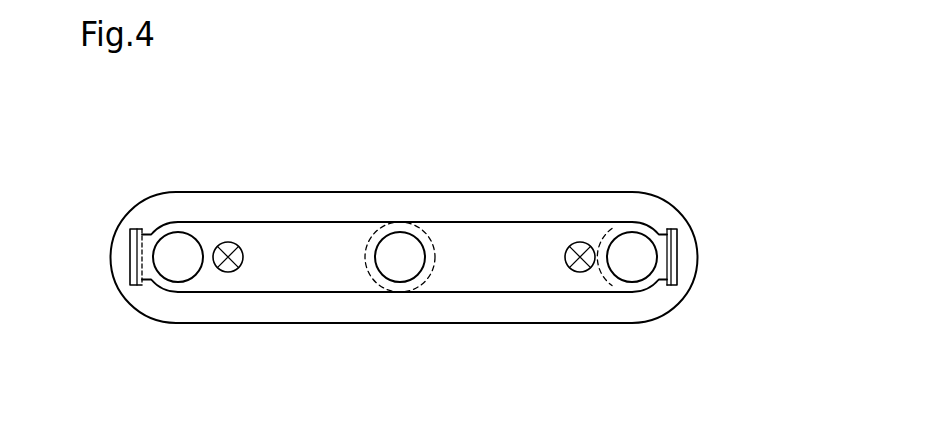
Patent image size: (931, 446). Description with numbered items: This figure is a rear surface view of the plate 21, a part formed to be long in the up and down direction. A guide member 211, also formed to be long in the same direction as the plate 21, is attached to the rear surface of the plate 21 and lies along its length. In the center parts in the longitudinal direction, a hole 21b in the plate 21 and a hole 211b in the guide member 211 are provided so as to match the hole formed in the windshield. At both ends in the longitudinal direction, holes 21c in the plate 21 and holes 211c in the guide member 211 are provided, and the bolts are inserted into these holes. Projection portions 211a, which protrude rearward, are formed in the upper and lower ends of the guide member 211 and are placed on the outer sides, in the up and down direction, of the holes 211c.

The plate 21 is at (203, 203).
The guide member 211 is at (533, 242).
The projection portions 211a is at (130, 268).
The hole 211b is at (395, 282).
The holes 211c is at (183, 285).
The hole 21b is at (376, 265).
The holes 21c is at (153, 262).